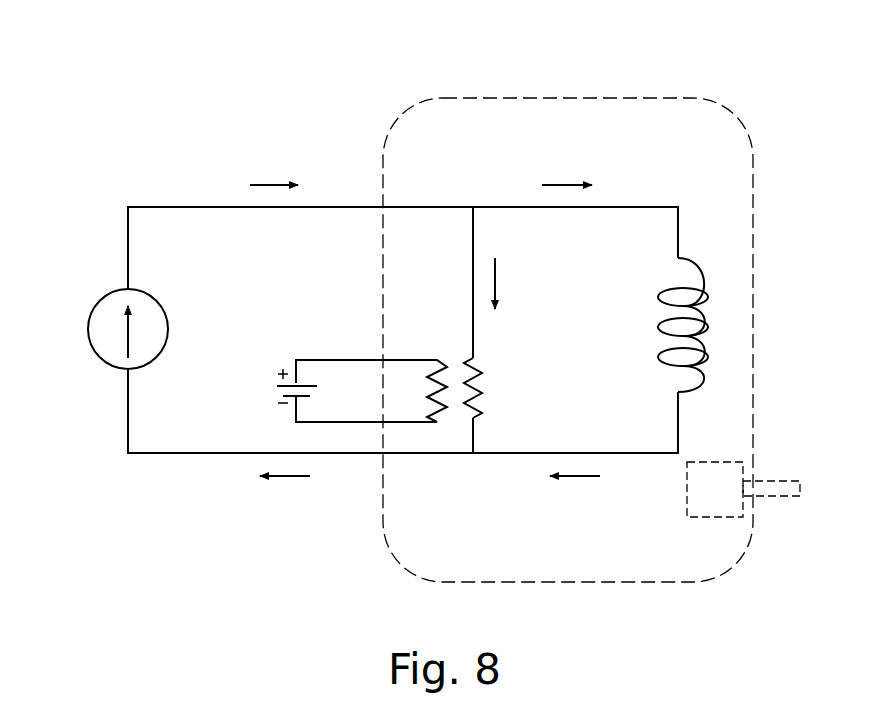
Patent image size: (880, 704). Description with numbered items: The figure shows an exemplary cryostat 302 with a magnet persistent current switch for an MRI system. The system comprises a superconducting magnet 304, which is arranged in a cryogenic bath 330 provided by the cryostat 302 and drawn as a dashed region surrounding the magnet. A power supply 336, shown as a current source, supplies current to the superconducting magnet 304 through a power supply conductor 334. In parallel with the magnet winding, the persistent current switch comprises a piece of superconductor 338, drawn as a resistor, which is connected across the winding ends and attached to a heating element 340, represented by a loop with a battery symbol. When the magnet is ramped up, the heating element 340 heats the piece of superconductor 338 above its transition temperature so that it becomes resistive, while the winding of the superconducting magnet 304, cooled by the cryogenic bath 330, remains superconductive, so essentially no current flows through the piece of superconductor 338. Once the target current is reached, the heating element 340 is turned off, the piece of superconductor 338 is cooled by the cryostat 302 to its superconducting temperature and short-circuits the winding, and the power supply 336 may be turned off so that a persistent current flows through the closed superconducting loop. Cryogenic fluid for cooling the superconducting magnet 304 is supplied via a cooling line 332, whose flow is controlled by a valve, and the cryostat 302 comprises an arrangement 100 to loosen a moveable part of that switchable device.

The arrangement 100 is at (724, 462).
The cryostat 302 is at (758, 80).
The superconducting magnet 304 is at (700, 266).
The cryogenic bath 330 is at (592, 98).
The cooling line 332 is at (793, 481).
The power supply 334 is at (190, 207).
The power supply 336 is at (98, 302).
The piece of superconductor 338 is at (484, 372).
The heating element 340 is at (343, 360).